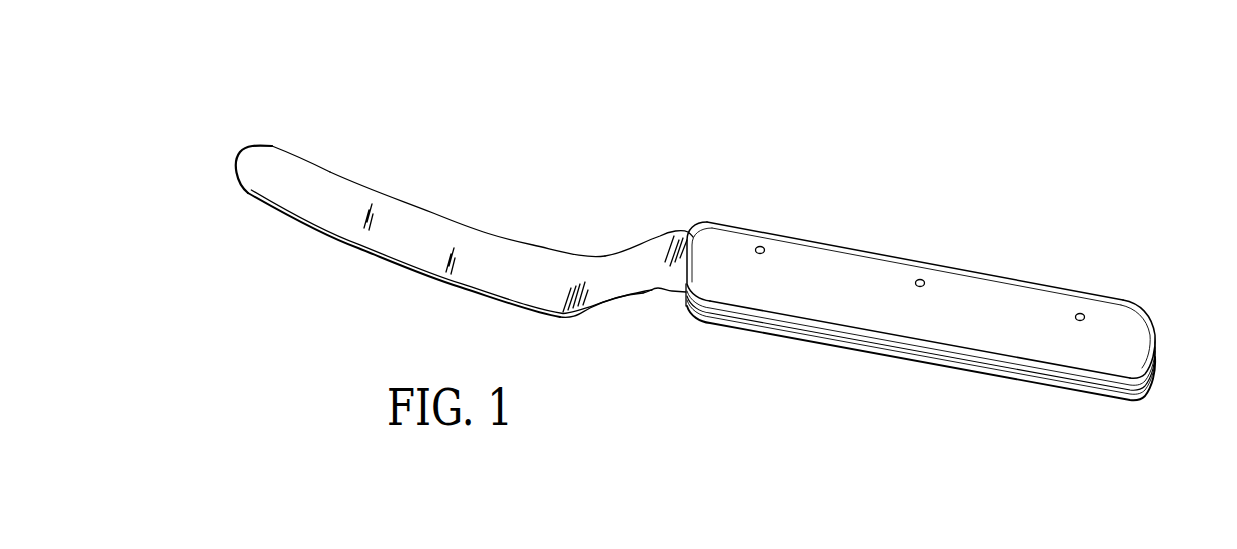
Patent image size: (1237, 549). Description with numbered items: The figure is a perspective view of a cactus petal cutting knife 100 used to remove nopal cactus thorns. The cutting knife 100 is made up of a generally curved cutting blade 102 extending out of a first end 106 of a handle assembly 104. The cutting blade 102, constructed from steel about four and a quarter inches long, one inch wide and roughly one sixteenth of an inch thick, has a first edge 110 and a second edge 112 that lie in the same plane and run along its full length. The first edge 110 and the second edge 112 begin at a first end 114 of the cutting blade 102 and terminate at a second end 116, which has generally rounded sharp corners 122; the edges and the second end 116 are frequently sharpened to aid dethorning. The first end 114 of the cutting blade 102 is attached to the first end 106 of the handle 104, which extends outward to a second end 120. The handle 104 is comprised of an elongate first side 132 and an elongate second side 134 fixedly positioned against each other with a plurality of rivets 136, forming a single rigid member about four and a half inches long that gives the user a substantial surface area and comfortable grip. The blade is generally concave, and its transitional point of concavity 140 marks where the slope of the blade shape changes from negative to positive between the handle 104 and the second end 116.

The cactus petal cutting knife 100 is at (562, 93).
The cutting blade 102 is at (458, 240).
The handle assembly 104 is at (923, 243).
The first end of handle 106 is at (713, 240).
The first edge 110 is at (520, 246).
The second edge 112 is at (303, 230).
The first end of cutting blade 114 is at (667, 231).
The second end of cutting blade 116 is at (243, 152).
The second end of handle 120 is at (1128, 328).
The rounded sharp corners 122 is at (287, 148).
The elongate first side 132 is at (822, 253).
The elongate second side 134 is at (984, 373).
The rivets 136 is at (927, 280).
The transitional point of concavity 140 is at (560, 320).